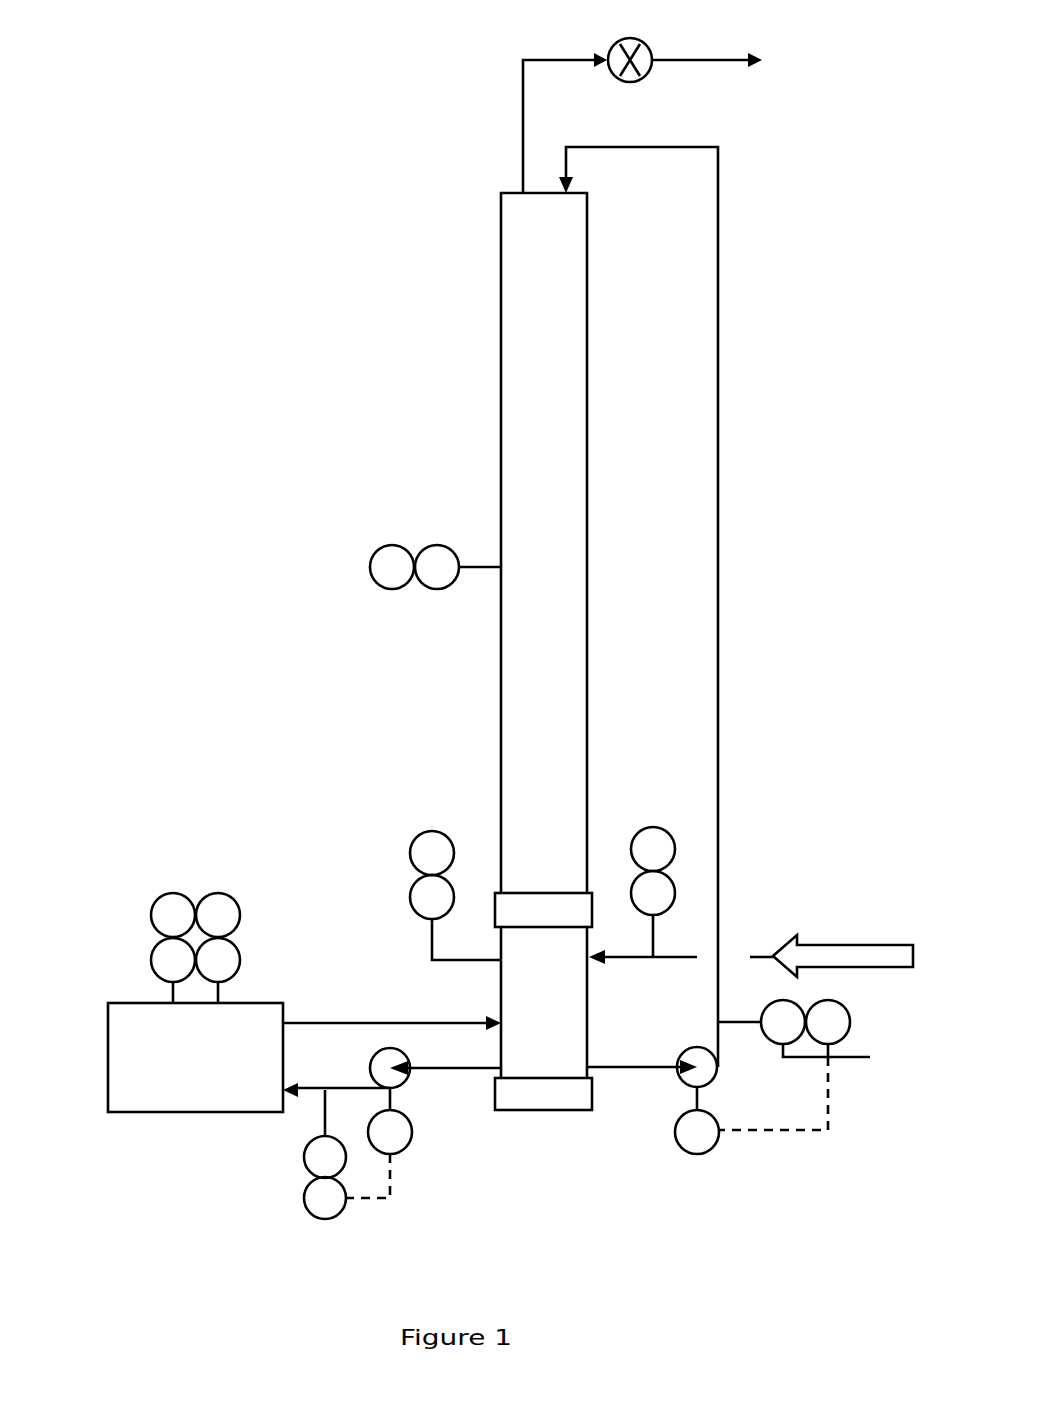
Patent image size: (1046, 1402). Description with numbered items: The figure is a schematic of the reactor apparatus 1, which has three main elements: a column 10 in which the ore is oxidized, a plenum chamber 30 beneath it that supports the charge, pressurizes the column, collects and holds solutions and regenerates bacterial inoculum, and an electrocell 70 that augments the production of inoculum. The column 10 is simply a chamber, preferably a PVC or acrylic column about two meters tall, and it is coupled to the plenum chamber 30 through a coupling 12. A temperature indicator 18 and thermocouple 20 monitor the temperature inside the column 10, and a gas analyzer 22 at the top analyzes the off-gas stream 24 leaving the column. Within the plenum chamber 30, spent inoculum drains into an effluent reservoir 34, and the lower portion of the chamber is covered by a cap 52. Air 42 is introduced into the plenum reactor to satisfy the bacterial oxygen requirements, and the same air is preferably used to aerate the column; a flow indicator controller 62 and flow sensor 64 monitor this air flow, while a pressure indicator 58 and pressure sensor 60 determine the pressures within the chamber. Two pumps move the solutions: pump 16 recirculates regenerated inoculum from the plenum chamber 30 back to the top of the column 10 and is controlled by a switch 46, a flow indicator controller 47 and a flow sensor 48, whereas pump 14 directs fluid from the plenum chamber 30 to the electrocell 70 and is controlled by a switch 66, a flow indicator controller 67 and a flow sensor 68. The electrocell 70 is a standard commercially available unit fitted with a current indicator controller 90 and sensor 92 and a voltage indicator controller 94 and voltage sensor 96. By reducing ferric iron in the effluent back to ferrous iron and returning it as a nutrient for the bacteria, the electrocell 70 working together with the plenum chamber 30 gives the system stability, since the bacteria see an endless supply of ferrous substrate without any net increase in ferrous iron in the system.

The reactor apparatus 1 is at (497, 651).
The column 10 is at (527, 250).
The coupling 12 is at (543, 913).
The pump 14 is at (405, 1058).
The pump 16 is at (713, 1063).
The temperature indicator 18 is at (383, 585).
The thermocouple 20 is at (438, 585).
The gas analyzer 22 is at (627, 43).
The off-gas stream 24 is at (523, 112).
The plenum chamber 30 is at (577, 1010).
The effluent reservoir 34 is at (718, 240).
The air 42 is at (775, 955).
The switch 46 is at (697, 1154).
The flow indicator controller 47 is at (850, 1022).
The flow sensor 48 is at (812, 1087).
The cap 52 is at (592, 1093).
The pressure indicator 58 is at (412, 851).
The pressure sensor 60 is at (410, 897).
The flow indicator controller 62 is at (675, 849).
The flow sensor 64 is at (675, 893).
The switch 66 is at (410, 1130).
The flow indicator controller 67 is at (324, 1220).
The flow sensor 68 is at (304, 1157).
The electrocell 70 is at (125, 1048).
The current indicator controller 90 is at (151, 913).
The current sensor 92 is at (151, 958).
The voltage indicator controller 94 is at (240, 918).
The voltage sensor 96 is at (232, 968).